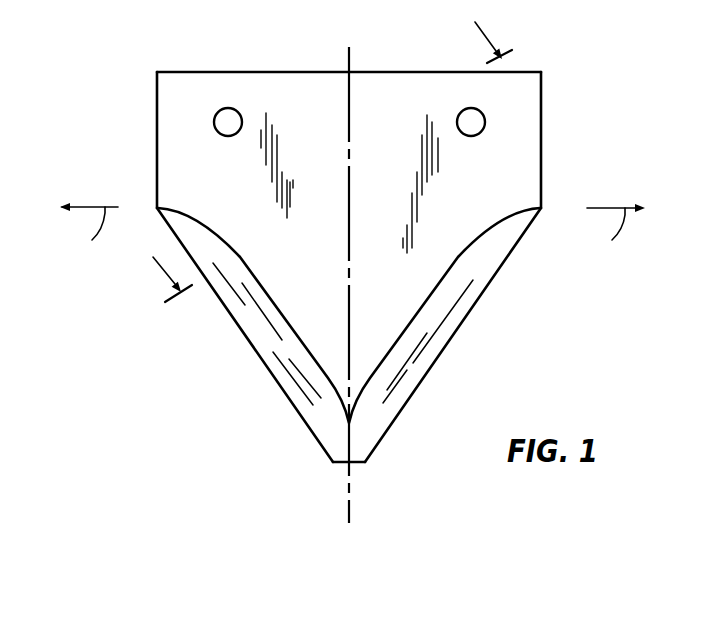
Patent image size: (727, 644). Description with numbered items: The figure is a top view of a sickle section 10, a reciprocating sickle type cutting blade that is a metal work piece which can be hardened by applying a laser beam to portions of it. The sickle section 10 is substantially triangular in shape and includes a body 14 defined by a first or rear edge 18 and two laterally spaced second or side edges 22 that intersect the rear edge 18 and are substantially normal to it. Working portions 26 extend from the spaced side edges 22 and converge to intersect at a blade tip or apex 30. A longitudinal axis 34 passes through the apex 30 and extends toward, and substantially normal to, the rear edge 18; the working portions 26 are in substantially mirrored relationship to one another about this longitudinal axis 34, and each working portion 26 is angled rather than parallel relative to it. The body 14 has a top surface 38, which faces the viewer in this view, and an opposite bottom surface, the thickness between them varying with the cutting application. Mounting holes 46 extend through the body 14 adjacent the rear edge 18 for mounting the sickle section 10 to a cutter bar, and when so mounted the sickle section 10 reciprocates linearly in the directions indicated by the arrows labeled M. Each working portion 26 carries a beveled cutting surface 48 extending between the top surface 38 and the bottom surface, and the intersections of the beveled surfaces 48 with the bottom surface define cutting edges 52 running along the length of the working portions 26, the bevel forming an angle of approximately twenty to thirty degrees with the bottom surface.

The sickle section 10 is at (103, 85).
The body 14 is at (366, 98).
The rear edge 18 is at (203, 72).
The side edges 22 is at (157, 173).
The working portions 26 is at (238, 372).
The apex 30 is at (352, 465).
The longitudinal axis 34 is at (347, 508).
The top surface 38 is at (392, 312).
The mounting holes 46 is at (230, 109).
The beveled cutting surface 48 is at (221, 258).
The cutting edges 52 is at (296, 411).